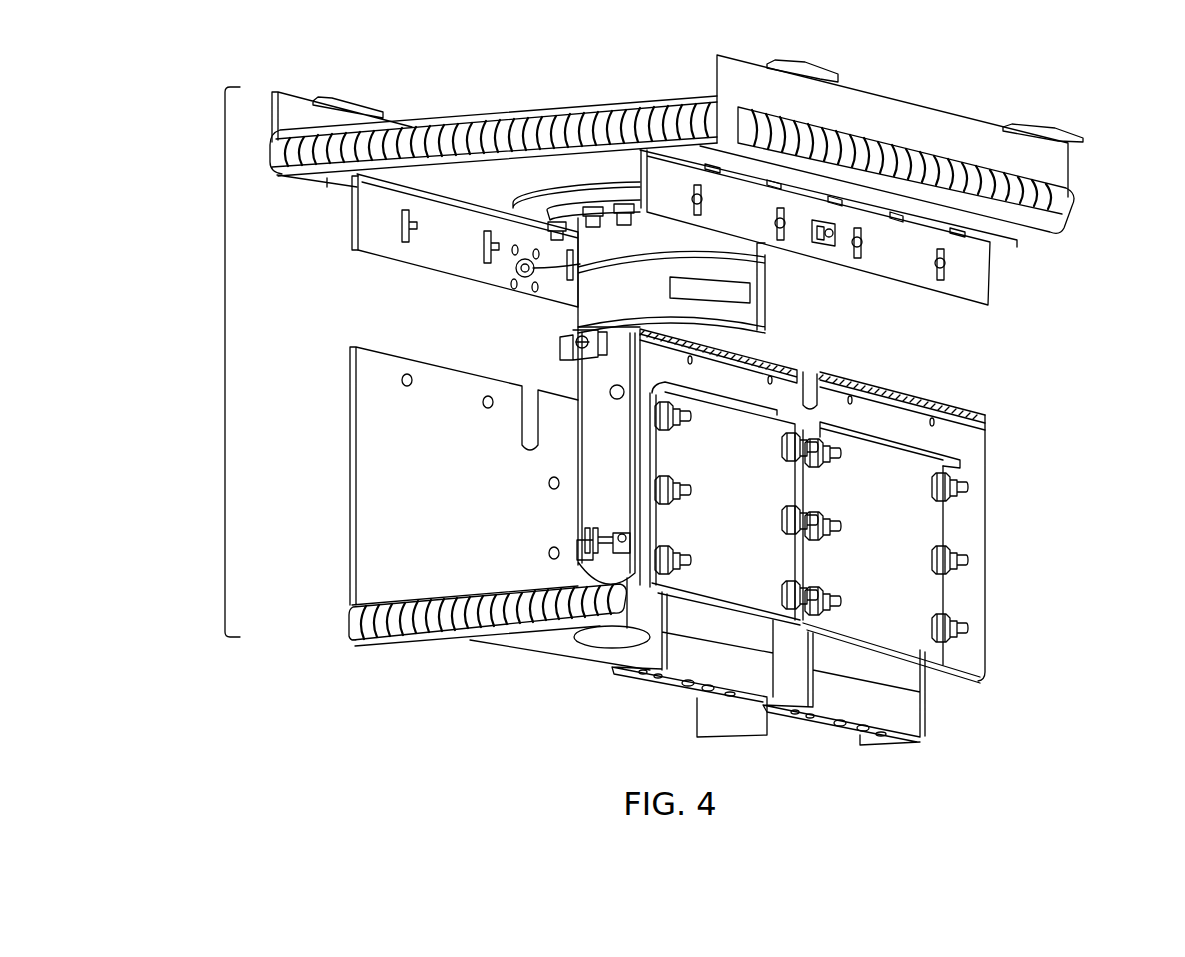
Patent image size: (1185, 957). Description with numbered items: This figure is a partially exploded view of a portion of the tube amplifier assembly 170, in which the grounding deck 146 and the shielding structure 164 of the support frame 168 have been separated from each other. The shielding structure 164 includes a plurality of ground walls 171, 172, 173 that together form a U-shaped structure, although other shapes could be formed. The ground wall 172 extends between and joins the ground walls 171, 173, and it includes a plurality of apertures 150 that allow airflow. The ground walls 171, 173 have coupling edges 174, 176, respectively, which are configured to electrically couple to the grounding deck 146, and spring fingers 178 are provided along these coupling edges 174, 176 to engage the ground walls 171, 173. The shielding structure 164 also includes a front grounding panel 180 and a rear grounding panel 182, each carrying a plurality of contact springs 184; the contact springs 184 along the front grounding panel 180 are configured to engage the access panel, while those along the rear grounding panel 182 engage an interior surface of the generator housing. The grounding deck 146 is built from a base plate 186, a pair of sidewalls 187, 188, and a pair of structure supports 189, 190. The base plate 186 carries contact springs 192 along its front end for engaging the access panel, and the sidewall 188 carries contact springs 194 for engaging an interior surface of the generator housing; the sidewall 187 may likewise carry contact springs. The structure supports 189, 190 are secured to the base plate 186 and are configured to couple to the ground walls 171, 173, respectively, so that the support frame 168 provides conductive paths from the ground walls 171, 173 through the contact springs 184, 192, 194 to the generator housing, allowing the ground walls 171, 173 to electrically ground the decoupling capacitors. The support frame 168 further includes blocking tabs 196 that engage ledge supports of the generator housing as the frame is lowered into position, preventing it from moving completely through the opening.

The grounding deck 146 is at (650, 78).
The tube amplifier assembly 170 is at (1058, 74).
The blocking tabs 196 is at (810, 62).
The sidewall 188 is at (914, 118).
The sidewall 187 is at (290, 106).
The contact springs 192 is at (573, 125).
The contact springs 194 is at (1072, 208).
The structure support 190 is at (983, 263).
The structure support 189 is at (371, 243).
The base plate 186 is at (450, 182).
The support frame 168 is at (225, 345).
The coupling edge 174 is at (433, 357).
The ground wall 171 is at (367, 406).
The shielding structure 164 is at (336, 498).
The spring fingers 178 is at (903, 392).
The coupling edge 176 is at (924, 386).
The ground wall 173 is at (983, 503).
The front grounding panel 180 is at (360, 648).
The contact springs 184 is at (428, 625).
The apertures 150 is at (541, 655).
The ground wall 172 is at (562, 655).
The rear grounding panel 182 is at (947, 705).